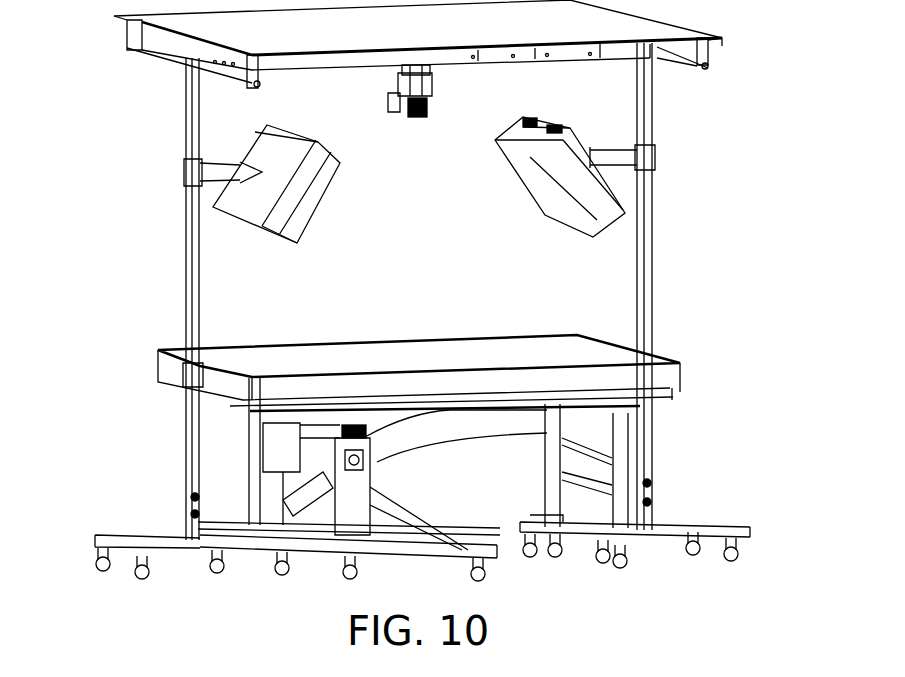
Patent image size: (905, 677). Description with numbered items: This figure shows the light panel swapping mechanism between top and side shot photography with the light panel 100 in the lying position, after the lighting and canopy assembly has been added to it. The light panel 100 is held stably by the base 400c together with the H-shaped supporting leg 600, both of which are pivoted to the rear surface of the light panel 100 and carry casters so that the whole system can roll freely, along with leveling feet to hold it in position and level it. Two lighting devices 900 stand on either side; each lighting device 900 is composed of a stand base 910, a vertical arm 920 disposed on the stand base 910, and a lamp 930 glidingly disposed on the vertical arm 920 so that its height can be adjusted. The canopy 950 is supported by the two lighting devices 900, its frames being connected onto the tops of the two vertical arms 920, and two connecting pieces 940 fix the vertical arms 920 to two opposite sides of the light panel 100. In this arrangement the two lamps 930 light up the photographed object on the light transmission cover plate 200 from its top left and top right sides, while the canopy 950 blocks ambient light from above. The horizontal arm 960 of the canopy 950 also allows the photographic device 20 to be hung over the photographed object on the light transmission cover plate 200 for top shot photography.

The lighting device 900 is at (137, 195).
The canopy 950 is at (116, 38).
The horizontal arm 960 is at (611, 50).
The vertical arm 920 is at (187, 280).
The photographic device 20 is at (437, 80).
The lamp 930 is at (272, 144).
The connecting piece 940 is at (185, 369).
The stand base 910 is at (168, 556).
The light panel 100 is at (682, 373).
The light transmission cover plate 200 is at (567, 345).
The base 400c is at (394, 562).
The supporting leg 600 is at (633, 548).